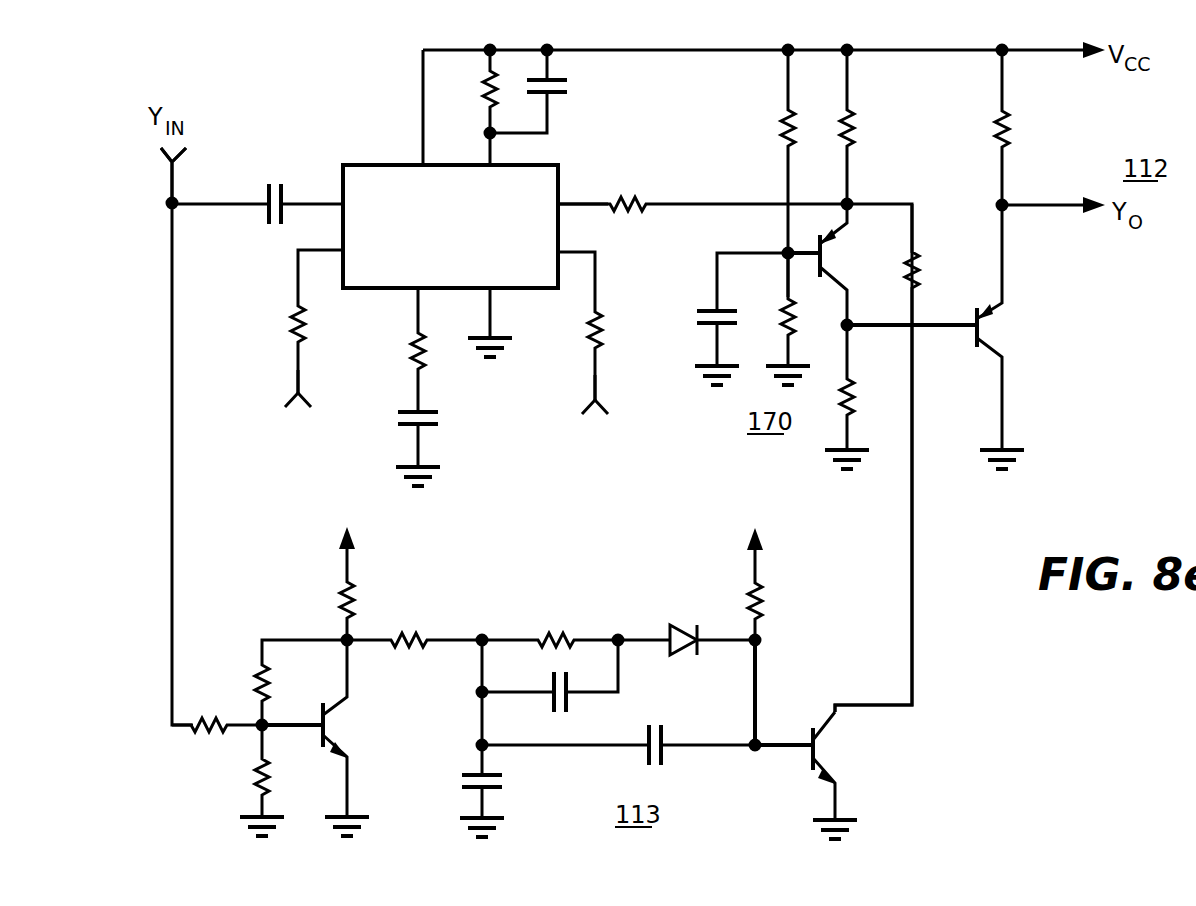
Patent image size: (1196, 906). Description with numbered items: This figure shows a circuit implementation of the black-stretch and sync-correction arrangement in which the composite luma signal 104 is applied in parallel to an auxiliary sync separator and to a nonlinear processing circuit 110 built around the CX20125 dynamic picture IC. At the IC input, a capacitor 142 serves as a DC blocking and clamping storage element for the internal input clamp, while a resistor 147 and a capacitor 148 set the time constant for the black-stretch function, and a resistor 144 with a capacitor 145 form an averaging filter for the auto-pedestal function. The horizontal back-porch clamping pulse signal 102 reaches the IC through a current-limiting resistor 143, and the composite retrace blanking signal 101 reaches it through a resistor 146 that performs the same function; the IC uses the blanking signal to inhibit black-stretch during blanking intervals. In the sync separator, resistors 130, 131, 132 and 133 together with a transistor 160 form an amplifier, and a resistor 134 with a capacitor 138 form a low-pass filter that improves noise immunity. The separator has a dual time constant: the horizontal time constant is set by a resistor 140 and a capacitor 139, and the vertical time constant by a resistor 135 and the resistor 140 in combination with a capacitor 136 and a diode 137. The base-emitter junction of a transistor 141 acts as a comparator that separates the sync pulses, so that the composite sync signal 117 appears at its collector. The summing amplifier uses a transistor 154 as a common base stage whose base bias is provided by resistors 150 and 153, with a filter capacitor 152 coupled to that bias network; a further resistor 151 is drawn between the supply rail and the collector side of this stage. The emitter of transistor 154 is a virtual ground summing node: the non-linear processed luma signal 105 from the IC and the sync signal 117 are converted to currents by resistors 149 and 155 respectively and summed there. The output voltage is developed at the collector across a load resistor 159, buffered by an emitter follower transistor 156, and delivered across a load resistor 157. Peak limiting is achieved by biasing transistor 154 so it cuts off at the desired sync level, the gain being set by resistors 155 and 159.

The composite horizontal and vertical retrace blanking signal 101 is at (597, 382).
The horizontal back-porch clamping pulse signal 102 is at (296, 388).
The composite luminance signal 104 is at (177, 173).
The non-linear processed composite luminance signal 105 is at (580, 200).
The nonlinear processing circuit 110 is at (385, 165).
The composite sync signal 117 is at (890, 708).
The resistor 130 is at (207, 718).
The resistor 131 is at (272, 675).
The resistor 132 is at (256, 773).
The resistor 133 is at (356, 602).
The resistor 134 is at (416, 648).
The resistor 135 is at (550, 634).
The capacitor 136 is at (558, 712).
The diode 137 is at (668, 636).
The capacitor 138 is at (462, 775).
The capacitor 139 is at (658, 726).
The resistor 140 is at (766, 604).
The transistor 141 is at (828, 733).
The capacitor 142 is at (264, 218).
The resistor 143 is at (290, 324).
The resistor 144 is at (426, 350).
The capacitor 145 is at (440, 424).
The resistor 146 is at (590, 323).
The resistor 147 is at (483, 80).
The capacitor 148 is at (562, 82).
The resistor 149 is at (632, 190).
The resistor 150 is at (778, 135).
The resistor 151 is at (855, 127).
The filter capacitor 152 is at (700, 308).
The resistor 153 is at (780, 316).
The transistor 154 is at (833, 262).
The resistor 155 is at (920, 290).
The transistor 156 is at (992, 335).
The load resistor 157 is at (1010, 129).
The load resistor 159 is at (852, 404).
The transistor 160 is at (338, 735).